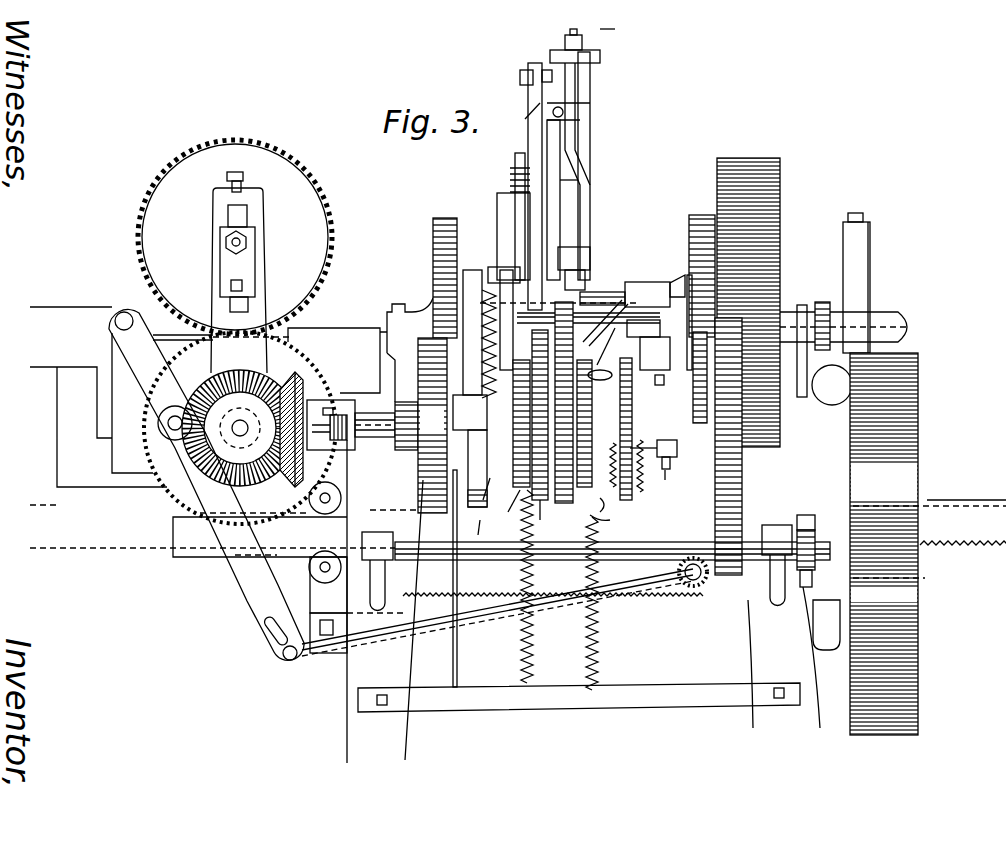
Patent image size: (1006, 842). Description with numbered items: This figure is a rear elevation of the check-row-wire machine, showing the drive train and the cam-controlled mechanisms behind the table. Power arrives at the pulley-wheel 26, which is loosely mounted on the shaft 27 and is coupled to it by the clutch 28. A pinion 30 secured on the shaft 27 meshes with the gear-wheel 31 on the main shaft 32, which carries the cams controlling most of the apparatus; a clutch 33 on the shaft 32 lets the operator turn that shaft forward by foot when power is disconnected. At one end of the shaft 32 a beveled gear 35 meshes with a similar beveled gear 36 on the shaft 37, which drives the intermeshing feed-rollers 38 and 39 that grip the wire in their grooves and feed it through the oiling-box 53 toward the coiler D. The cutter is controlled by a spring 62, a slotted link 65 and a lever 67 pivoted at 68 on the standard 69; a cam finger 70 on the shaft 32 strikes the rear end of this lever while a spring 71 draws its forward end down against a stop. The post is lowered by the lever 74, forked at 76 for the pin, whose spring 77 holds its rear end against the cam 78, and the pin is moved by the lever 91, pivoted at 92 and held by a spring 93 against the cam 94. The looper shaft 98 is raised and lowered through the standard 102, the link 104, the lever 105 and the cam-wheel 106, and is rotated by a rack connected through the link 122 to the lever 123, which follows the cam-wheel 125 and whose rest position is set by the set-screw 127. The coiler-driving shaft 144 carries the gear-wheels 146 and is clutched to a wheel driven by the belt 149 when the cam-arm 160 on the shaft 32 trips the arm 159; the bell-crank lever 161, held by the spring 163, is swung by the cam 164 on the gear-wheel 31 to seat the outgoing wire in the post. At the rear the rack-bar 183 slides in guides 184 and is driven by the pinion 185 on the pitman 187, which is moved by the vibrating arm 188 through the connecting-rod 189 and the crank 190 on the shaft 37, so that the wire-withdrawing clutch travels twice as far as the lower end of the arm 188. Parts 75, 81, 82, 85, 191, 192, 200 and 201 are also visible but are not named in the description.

The pulley-wheel 26 is at (900, 544).
The shaft 27 is at (495, 560).
The clutch 28 is at (830, 582).
The pinion 30 is at (730, 580).
The gear-wheel 31 is at (712, 470).
The shaft 32 is at (380, 440).
The clutch 33 is at (432, 421).
The beveled gear 35 is at (290, 478).
The beveled gear 36 is at (258, 478).
The shaft 37 is at (240, 428).
The lower feed-roller 38 is at (168, 488).
The feed-roller 39 is at (318, 278).
The oiling-box 53 is at (337, 360).
The spring 62 is at (520, 193).
The link 65 is at (510, 180).
The lever 67 is at (515, 240).
The pivot 68 is at (428, 282).
The standard 69 is at (468, 268).
The cam arm or finger 70 is at (495, 487).
The spring 71 is at (470, 451).
The lever 74 is at (606, 505).
The spring 75 is at (616, 466).
The fork 76 is at (564, 402).
The spring 77 is at (604, 603).
The cam 78 is at (585, 423).
The collar 81 is at (665, 470).
The spring 82 is at (658, 487).
The pinion 85 is at (628, 429).
The lever 91 is at (469, 527).
The pivot 92 is at (611, 523).
The spring 93 is at (539, 586).
The cam 94 is at (505, 511).
The shaft 98 is at (585, 170).
The standard 102 is at (570, 155).
The link 104 is at (585, 190).
The lever 105 is at (605, 268).
The cam-wheel 106 is at (544, 415).
The link 122 is at (518, 117).
The lever 123 is at (528, 90).
The cam-wheel 125 is at (548, 519).
The set-screw 127 is at (560, 212).
The shaft 144 is at (598, 290).
The gear-wheels 146 is at (442, 218).
The belt 149 is at (782, 192).
The arm 159 is at (676, 471).
The cam-arm 160 is at (668, 380).
The bell-crank lever 161 is at (610, 346).
The spring 163 is at (649, 375).
The cam 164 is at (725, 320).
The sliding rack-bar 183 is at (929, 522).
The guides 184 is at (325, 577).
The pinion 185 is at (693, 586).
The pitman or connecting-rod 187 is at (497, 612).
The vibrating arm or lever 188 is at (258, 603).
The pitman or connecting-rod 189 is at (165, 435).
The crank 190 is at (340, 450).
The frame 191 is at (900, 325).
The shaft 192 is at (882, 312).
The collar 200 is at (818, 302).
The cam 201 is at (820, 372).
The coiler D is at (605, 340).